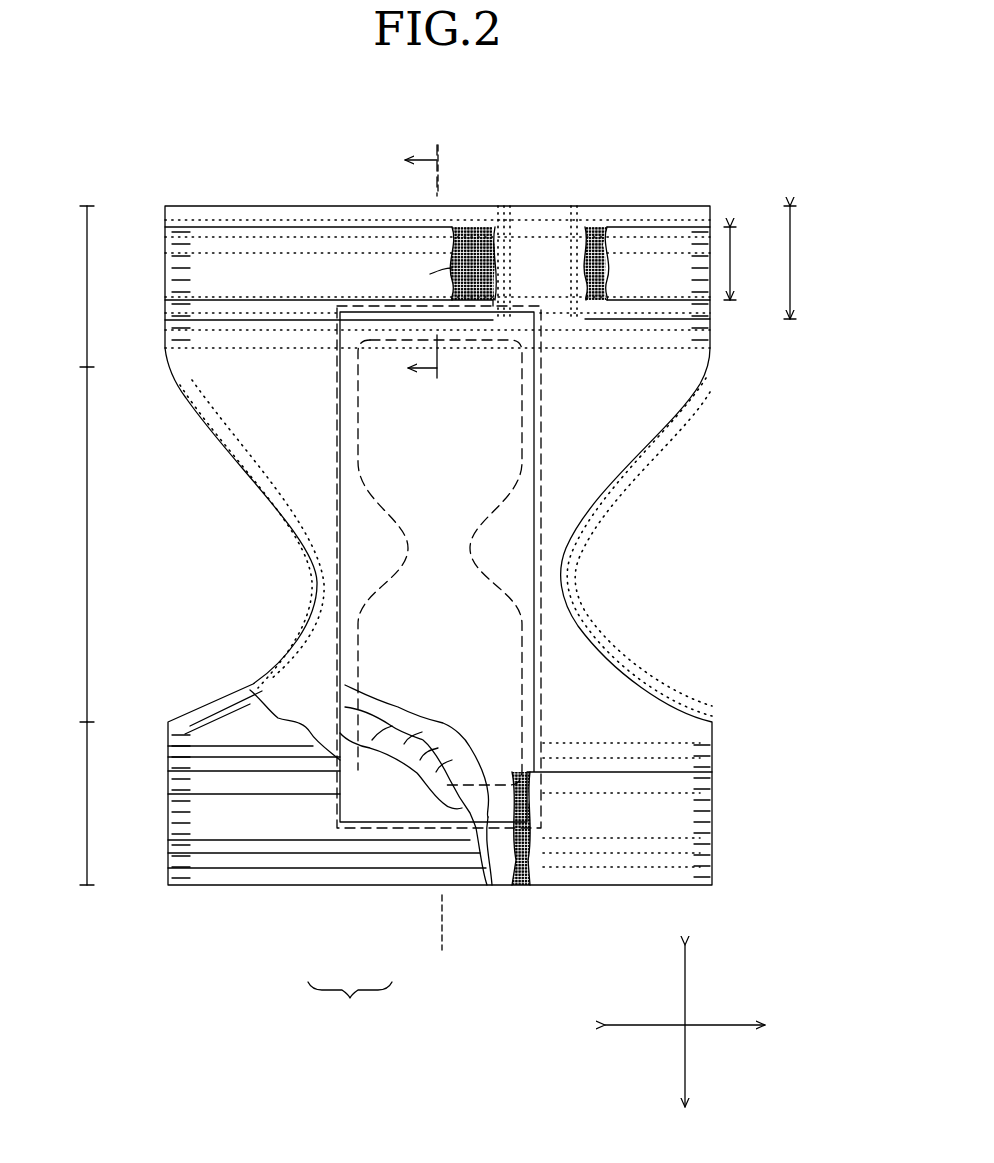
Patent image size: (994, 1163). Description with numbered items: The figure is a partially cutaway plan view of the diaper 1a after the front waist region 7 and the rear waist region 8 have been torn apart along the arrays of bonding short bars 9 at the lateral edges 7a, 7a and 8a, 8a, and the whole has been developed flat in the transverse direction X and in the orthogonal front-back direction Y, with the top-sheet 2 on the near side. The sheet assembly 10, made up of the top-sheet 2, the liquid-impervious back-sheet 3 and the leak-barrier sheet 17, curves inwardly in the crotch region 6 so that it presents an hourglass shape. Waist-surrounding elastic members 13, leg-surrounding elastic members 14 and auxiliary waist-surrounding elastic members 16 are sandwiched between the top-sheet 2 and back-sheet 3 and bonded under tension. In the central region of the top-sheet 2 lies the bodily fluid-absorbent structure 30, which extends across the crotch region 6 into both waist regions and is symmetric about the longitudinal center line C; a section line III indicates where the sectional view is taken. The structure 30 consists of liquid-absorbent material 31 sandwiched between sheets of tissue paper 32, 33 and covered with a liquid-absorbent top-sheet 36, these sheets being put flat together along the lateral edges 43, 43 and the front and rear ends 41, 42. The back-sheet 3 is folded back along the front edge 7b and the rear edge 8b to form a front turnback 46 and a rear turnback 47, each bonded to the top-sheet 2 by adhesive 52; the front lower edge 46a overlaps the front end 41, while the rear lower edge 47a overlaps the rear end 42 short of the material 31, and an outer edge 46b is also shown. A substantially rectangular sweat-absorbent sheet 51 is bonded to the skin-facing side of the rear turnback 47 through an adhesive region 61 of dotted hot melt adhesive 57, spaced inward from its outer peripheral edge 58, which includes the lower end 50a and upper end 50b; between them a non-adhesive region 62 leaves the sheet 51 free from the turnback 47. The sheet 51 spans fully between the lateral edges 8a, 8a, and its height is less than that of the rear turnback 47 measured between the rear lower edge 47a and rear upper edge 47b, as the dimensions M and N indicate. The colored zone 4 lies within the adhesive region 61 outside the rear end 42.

The diaper 1a is at (690, 120).
The top-sheet 2 is at (300, 652).
The back-sheet 3 is at (196, 722).
The colored zone 4 is at (468, 312).
The crotch region 6 is at (86, 552).
The front waist region 7 is at (86, 801).
The lateral edges of front waist region 7a is at (170, 752).
The front edge 7b is at (676, 886).
The rear waist region 8 is at (86, 280).
The lateral edges of rear waist region 8a is at (178, 222).
The rear edge 8b is at (482, 212).
The bonding short bars 9 is at (184, 330).
The sheet assembly 10 is at (350, 1000).
The waist-surrounding elastic members 13 is at (266, 886).
The leg-surrounding elastic members 14 is at (236, 692).
The auxiliary waist-surrounding elastic members 16 is at (252, 772).
The leak-barrier sheet 17 is at (364, 820).
The bodily fluid-absorbent structure 30 is at (540, 436).
The liquid-absorbent material 31 is at (398, 730).
The sheet of tissue paper 32 is at (444, 735).
The sheet of tissue paper 33 is at (368, 720).
The liquid-absorbent top-sheet 36 is at (520, 686).
The front end 41 is at (490, 886).
The rear end 42 is at (516, 314).
The lateral edges of absorbent structure 43 is at (340, 496).
The front turnback 46 is at (630, 768).
The front lower edge 46a is at (686, 772).
The rear waist sheet outer edge 46b is at (628, 886).
The rear turnback 47 is at (630, 324).
The rear lower edge 47a is at (704, 324).
The rear upper edge 47b is at (436, 212).
The lower end 50a is at (262, 322).
The upper end 50b is at (230, 224).
The sweat-absorbent sheet 51 is at (306, 224).
The adhesive 52 is at (588, 222).
The hot melt adhesive 57 is at (506, 232).
The outer peripheral edge 58 is at (165, 262).
The adhesive region 61 is at (420, 262).
The non-adhesive region 62 is at (444, 240).
The dimension M is at (731, 262).
The dimension N is at (791, 253).
The longitudinal center line C is at (436, 145).
The section line III is at (408, 276).
The transverse direction X is at (712, 1028).
The front-back direction Y is at (684, 1060).